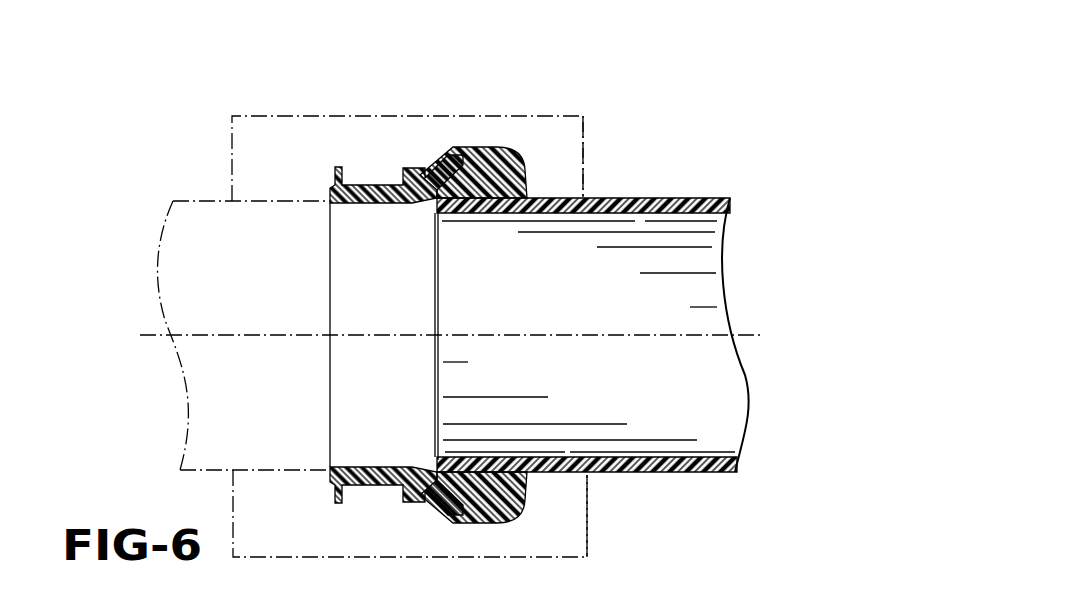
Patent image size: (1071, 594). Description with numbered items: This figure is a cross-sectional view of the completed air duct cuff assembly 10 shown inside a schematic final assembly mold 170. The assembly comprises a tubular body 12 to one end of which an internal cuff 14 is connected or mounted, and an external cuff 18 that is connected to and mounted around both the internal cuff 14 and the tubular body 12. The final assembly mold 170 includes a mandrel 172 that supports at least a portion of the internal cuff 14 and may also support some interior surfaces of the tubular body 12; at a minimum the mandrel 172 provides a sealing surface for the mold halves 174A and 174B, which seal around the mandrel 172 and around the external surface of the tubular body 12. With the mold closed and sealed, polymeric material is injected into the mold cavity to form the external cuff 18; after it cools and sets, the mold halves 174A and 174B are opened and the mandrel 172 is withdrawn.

The air duct cuff assembly 10 is at (692, 116).
The tubular body 12 is at (692, 195).
The internal cuff 14 is at (330, 484).
The external cuff 18 is at (522, 147).
The final assembly mold 170 is at (527, 96).
The mandrel 172 is at (212, 203).
The mold half 174A is at (587, 177).
The mold half 174B is at (590, 517).